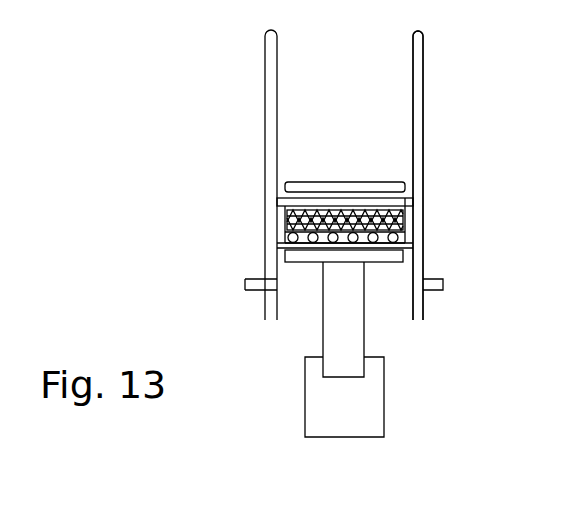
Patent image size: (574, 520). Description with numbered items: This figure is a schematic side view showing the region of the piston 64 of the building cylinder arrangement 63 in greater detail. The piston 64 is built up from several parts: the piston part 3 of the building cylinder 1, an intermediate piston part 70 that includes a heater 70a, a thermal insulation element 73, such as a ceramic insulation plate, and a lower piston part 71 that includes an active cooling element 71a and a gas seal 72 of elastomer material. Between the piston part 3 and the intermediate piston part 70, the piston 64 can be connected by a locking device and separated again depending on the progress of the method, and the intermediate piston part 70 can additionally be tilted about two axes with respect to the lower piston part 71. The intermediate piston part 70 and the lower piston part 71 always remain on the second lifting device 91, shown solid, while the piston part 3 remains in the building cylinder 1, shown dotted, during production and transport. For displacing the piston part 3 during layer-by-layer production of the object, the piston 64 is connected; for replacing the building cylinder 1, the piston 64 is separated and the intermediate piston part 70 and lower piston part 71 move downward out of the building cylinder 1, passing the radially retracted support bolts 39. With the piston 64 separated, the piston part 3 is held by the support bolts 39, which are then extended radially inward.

The building cylinder 1 is at (252, 88).
The piston part 3 is at (356, 182).
The building cylinder arrangement 63 is at (437, 150).
The support bolts 39 is at (248, 280).
The intermediate piston part 70 is at (277, 215).
The heater 70a is at (413, 204).
The thermal insulation element 73 is at (405, 218).
The active cooling element 71a is at (405, 237).
The lower piston part 71 is at (309, 255).
The gas seal 72 is at (398, 256).
The piston 64 is at (374, 277).
The second lifting device 91 is at (367, 417).